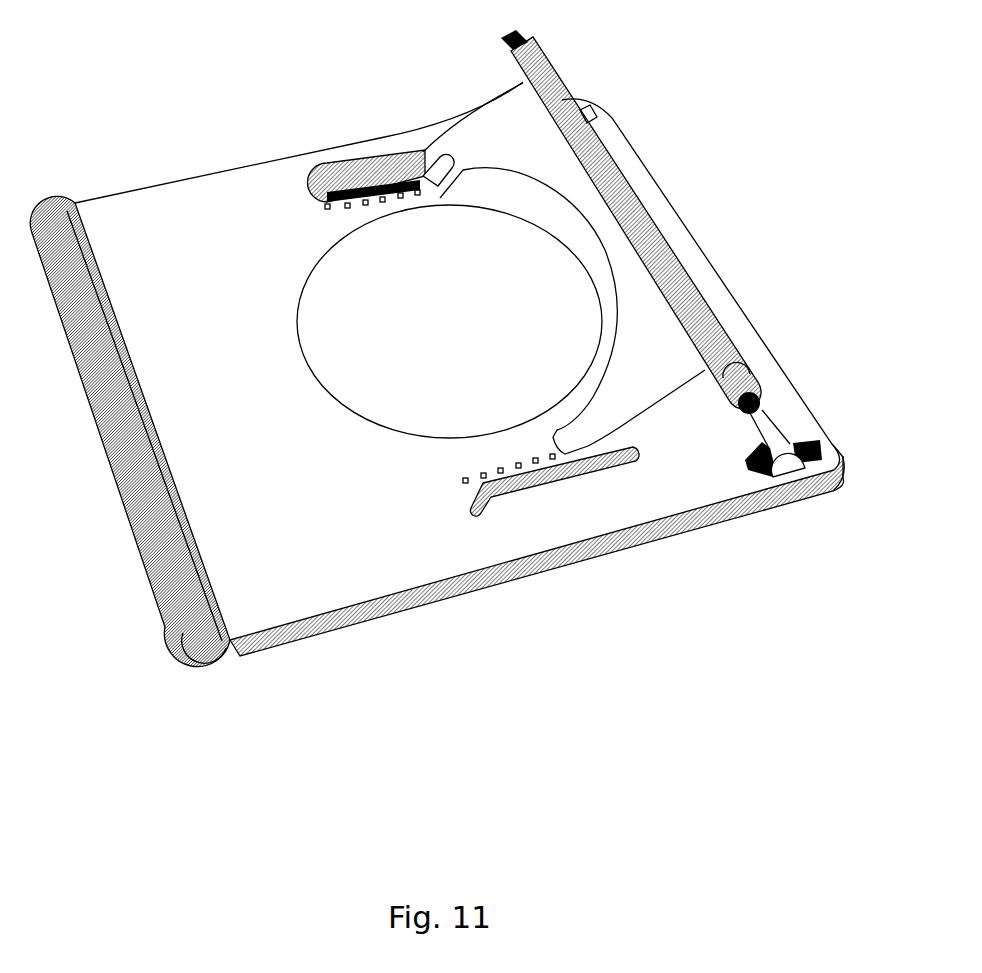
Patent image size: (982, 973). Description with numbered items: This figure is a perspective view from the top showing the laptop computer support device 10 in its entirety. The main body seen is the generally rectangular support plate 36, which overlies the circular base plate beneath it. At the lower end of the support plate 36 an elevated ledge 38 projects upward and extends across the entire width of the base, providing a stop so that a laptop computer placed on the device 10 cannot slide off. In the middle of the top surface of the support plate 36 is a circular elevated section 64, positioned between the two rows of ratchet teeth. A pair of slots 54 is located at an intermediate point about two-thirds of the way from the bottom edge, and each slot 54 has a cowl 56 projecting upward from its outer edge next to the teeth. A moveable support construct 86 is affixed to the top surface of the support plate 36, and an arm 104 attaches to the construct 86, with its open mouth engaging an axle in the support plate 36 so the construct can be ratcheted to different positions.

The laptop computer support device 10 is at (660, 96).
The support plate 36 is at (610, 540).
The elevated ledge 38 is at (240, 573).
The slots 54 is at (382, 188).
The cowl 56 is at (517, 483).
The circular elevated section 64 is at (410, 353).
The moveable support construct 86 is at (728, 276).
The arm 104 is at (777, 440).